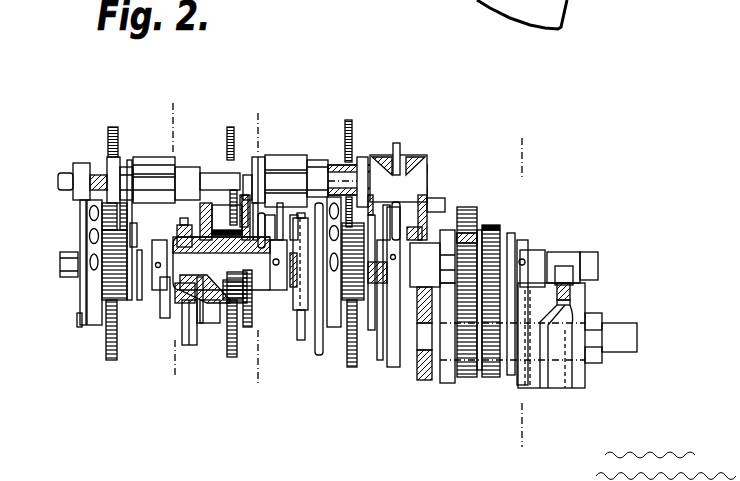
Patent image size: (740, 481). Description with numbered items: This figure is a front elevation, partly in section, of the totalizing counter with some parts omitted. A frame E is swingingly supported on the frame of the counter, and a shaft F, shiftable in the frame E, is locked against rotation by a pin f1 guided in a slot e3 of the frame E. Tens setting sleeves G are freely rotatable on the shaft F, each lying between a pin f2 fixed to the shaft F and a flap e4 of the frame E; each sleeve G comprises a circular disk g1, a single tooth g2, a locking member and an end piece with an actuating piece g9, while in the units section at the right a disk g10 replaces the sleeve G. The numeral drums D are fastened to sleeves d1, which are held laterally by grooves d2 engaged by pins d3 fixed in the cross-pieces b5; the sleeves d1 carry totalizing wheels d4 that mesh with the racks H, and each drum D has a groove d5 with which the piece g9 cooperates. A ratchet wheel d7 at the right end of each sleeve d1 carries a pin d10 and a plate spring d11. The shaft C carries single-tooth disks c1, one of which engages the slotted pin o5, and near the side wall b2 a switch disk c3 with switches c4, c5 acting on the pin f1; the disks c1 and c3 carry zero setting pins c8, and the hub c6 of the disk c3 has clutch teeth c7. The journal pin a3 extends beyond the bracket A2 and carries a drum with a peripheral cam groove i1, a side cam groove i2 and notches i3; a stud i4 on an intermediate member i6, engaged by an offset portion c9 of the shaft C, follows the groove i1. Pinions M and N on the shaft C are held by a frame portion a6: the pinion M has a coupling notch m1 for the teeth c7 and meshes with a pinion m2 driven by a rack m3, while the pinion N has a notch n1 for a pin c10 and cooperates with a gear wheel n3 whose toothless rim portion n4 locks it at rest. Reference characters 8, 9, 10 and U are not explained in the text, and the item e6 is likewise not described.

The shaft F is at (73, 180).
The flap e4 is at (95, 170).
The pin f2 is at (108, 160).
The rack H is at (113, 127).
The single tooth g2 is at (127, 165).
The tens setting sleeve G is at (152, 172).
The section line 10 is at (181, 244).
The pin d3 is at (203, 185).
The circular disk g1 is at (86, 205).
The section line 9 is at (265, 250).
The actuating piece g9 is at (88, 225).
The disk g10 is at (362, 165).
The frame E is at (370, 165).
The pin f1 is at (400, 157).
The slot e3 is at (425, 157).
The switch c4 is at (428, 200).
The rack m3 is at (462, 158).
The section line 8 is at (519, 293).
The hub c6 is at (465, 205).
The block e6 is at (440, 198).
The clutch teeth c7 is at (462, 225).
The coupling notch m1 is at (468, 238).
The pinion M is at (468, 238).
The pinion N is at (485, 242).
The pin c10 is at (540, 258).
The shaft C is at (62, 265).
The offset portion c9 is at (590, 262).
The coupling notch n1 is at (503, 262).
The intermediate member i6 is at (575, 276).
The stud i4 is at (572, 293).
The slot-like notches i3 is at (604, 333).
The journal pin a3 is at (630, 338).
The housing U is at (585, 380).
The cam groove i1 is at (556, 388).
The cam groove i2 is at (543, 388).
The gear wheel n3 is at (510, 375).
The toothless rim portion n4 is at (490, 378).
The frame portion a6 is at (479, 372).
The pinion m2 is at (465, 378).
The bracket A2 is at (440, 385).
The side wall b2 is at (432, 355).
The switch disk c3 is at (400, 360).
The switch c5 is at (392, 370).
The ratchet wheel d7 is at (112, 352).
The totalizing wheel d4 is at (92, 283).
The numeral drum D is at (105, 335).
The plate spring d11 is at (155, 237).
The cross-piece b5 is at (165, 318).
The single-tooth disk c1 is at (150, 335).
The pin d10 is at (122, 300).
The groove d5 is at (88, 322).
The zero setting pin c8 is at (160, 322).
The sleeve d1 is at (190, 338).
The groove d2 is at (180, 345).
The slotted pin o5 is at (268, 250).